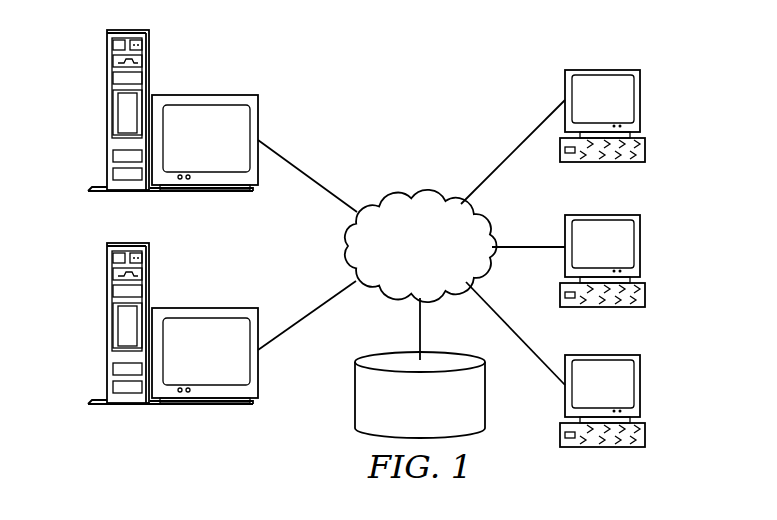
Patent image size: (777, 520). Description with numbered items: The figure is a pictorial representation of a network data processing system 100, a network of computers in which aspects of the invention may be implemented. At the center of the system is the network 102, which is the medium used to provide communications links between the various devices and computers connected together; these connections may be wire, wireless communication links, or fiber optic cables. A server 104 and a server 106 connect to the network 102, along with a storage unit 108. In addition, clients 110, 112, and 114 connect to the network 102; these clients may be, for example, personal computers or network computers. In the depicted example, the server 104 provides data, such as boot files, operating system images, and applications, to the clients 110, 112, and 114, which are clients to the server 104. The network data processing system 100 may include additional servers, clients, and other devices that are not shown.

The network data processing system 100 is at (473, 78).
The network 102 is at (392, 196).
The server 104 is at (106, 112).
The server 106 is at (106, 325).
The storage unit 108 is at (356, 405).
The client 110 is at (640, 100).
The client 112 is at (640, 247).
The client 114 is at (640, 387).